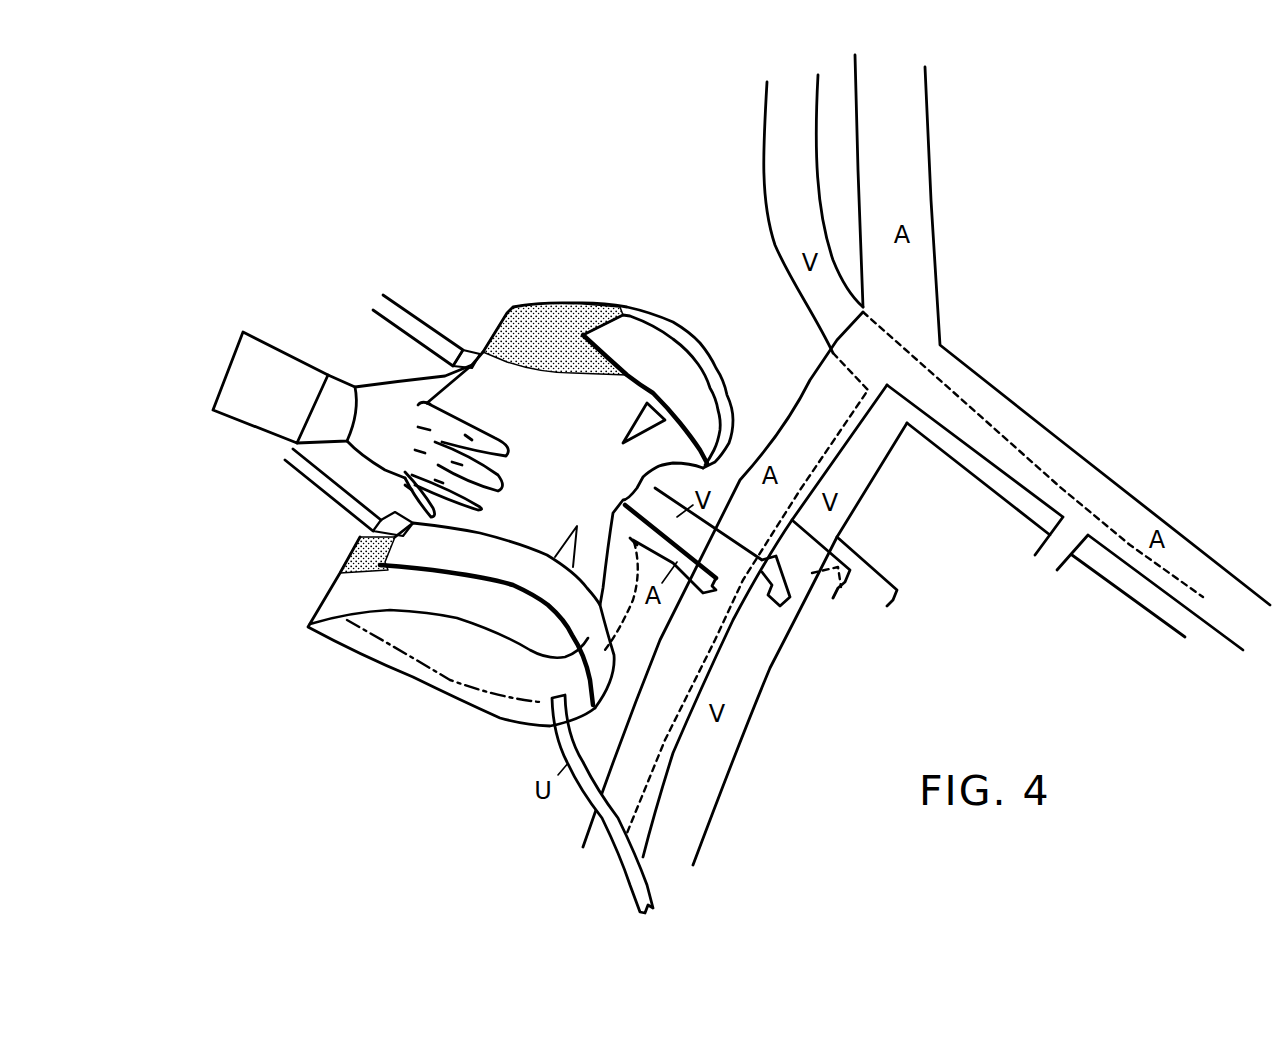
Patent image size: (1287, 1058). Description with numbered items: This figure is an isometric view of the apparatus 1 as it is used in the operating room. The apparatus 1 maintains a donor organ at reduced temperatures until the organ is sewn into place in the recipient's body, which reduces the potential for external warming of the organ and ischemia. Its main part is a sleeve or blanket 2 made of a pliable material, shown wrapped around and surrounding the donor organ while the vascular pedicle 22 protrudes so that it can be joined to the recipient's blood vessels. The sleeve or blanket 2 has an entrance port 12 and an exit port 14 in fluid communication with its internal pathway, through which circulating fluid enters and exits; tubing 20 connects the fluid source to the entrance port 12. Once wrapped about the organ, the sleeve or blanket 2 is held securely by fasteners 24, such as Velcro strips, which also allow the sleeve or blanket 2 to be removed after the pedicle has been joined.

The apparatus 1 is at (400, 742).
The sleeve or blanket 2 is at (327, 605).
The entrance port 12 is at (453, 363).
The exit port 14 is at (363, 523).
The tubing 20 is at (393, 302).
The vascular pedicle 22 is at (288, 462).
The fasteners 24 is at (663, 360).